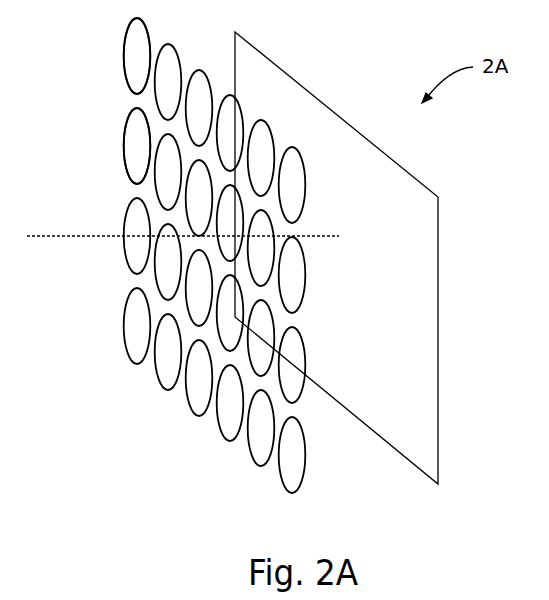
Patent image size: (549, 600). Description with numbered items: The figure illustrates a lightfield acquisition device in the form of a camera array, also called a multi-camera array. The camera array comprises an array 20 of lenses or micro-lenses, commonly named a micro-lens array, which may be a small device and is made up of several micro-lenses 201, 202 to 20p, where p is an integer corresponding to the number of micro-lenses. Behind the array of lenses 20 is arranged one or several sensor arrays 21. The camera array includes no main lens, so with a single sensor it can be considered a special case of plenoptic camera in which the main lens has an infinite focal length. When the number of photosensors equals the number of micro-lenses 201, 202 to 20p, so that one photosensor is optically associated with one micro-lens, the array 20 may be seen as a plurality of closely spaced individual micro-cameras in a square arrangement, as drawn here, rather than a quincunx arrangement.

The array of lenses 20 is at (211, 264).
The micro-lens 201 is at (130, 43).
The micro-lens 202 is at (135, 138).
The micro-lens 20p is at (292, 471).
The sensor array 21 is at (423, 235).